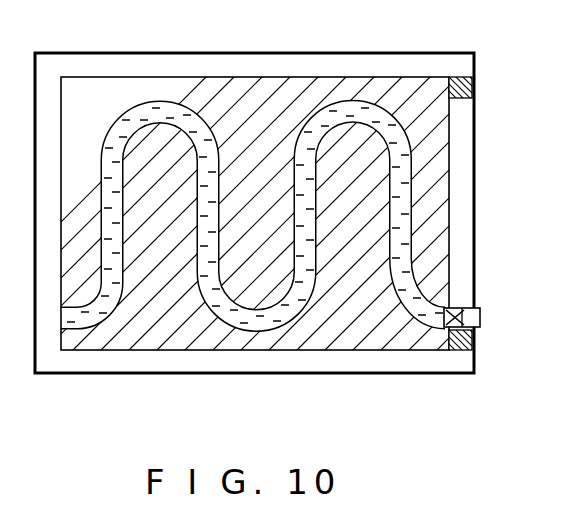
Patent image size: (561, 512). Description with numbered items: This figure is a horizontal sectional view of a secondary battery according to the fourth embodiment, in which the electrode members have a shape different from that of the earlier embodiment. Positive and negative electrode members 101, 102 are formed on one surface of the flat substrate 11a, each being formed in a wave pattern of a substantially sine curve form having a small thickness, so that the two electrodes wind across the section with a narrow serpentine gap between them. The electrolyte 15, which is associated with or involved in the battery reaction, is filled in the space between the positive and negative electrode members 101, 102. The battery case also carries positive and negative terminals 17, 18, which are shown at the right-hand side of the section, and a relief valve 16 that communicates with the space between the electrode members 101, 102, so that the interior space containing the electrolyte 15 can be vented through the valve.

The flat substrate 11a is at (450, 66).
The positive electrode member 101 is at (373, 90).
The negative electrode member 102 is at (358, 333).
The electrolyte 15 is at (267, 328).
The relief valve 16 is at (480, 310).
The positive terminal 17 is at (475, 86).
The negative terminal 18 is at (475, 337).